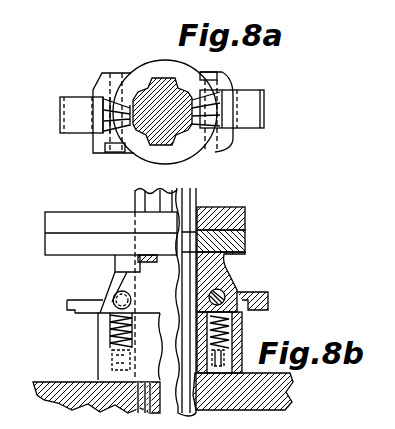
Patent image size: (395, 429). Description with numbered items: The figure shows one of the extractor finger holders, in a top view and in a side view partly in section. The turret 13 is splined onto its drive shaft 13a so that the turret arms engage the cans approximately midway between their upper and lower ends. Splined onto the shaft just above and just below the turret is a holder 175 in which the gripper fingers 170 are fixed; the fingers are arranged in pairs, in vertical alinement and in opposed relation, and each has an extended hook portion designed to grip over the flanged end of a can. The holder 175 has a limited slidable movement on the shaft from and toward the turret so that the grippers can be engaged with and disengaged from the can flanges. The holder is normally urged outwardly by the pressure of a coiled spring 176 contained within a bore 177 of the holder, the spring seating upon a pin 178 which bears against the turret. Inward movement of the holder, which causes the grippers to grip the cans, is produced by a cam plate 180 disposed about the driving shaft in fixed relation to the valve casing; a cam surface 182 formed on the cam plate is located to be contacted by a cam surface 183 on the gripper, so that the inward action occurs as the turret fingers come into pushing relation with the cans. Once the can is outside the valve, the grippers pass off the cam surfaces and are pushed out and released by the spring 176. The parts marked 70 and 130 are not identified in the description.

In FIG. 8B, the turret 13 is at (66, 398).
In FIG. 8A, the drive shaft 13a is at (152, 79).
In FIG. 8A, the shaft 70 is at (70, 133).
In FIG. 8B, the base member 130 is at (130, 414).
In FIG. 8A, the gripper finger 170 is at (250, 95).
In FIG. 8B, the gripper finger 170 is at (237, 287).
In FIG. 8A, the holder 175 is at (192, 160).
In FIG. 8B, the holder 175 is at (98, 362).
In FIG. 8B, the coiled spring 176 is at (110, 335).
In FIG. 8B, the bore 177 is at (242, 332).
In FIG. 8B, the pin 178 is at (258, 393).
In FIG. 8B, the cam plate 180 is at (246, 252).
In FIG. 8B, the cam surface 182 is at (115, 258).
In FIG. 8A, the cam surface 183 is at (106, 150).
In FIG. 8B, the cam surface 183 is at (118, 266).